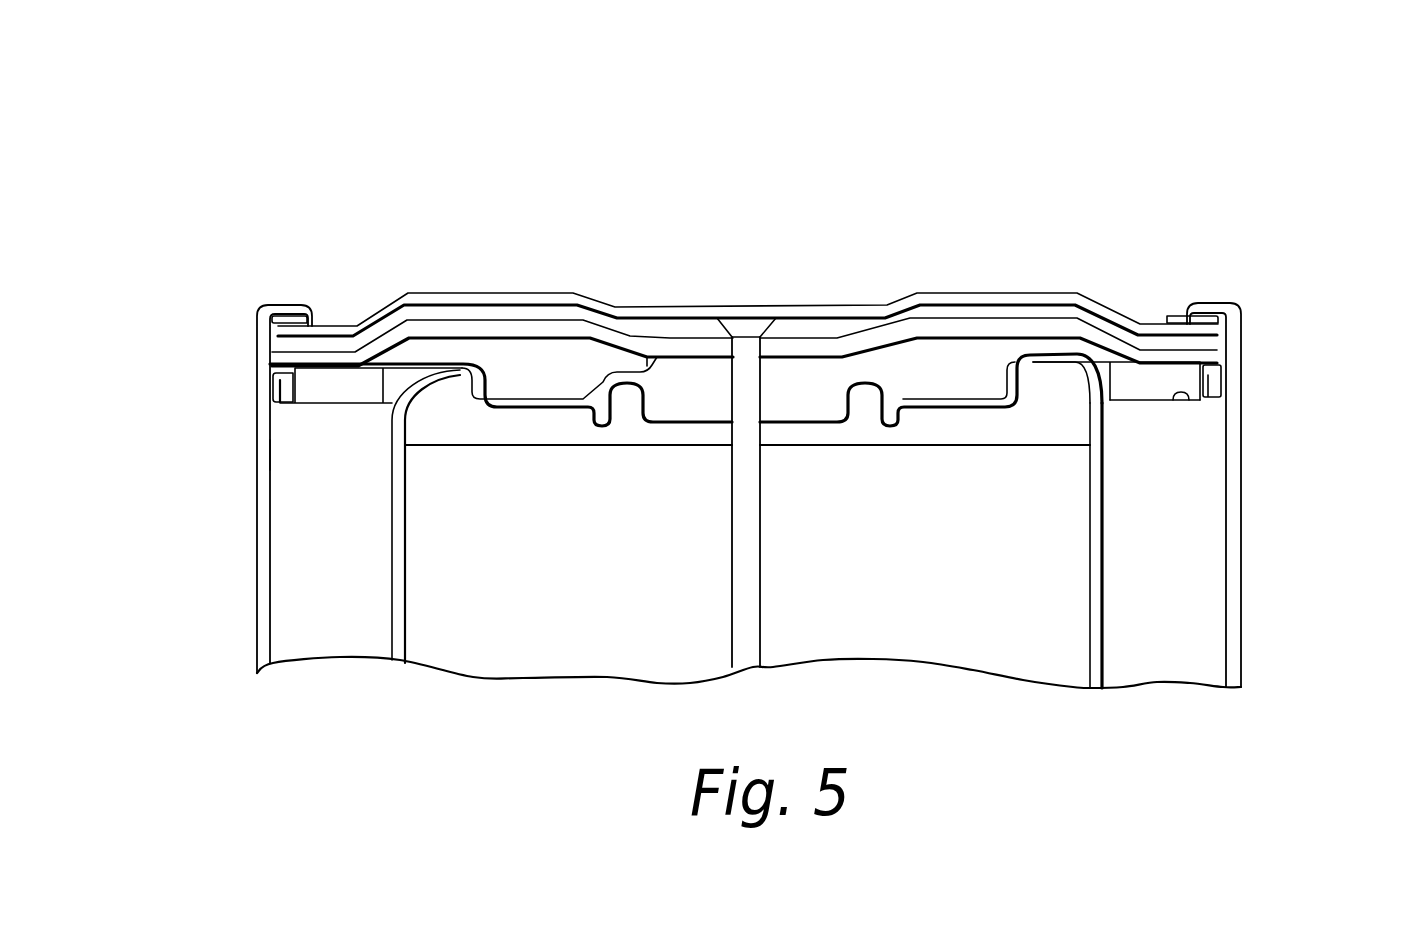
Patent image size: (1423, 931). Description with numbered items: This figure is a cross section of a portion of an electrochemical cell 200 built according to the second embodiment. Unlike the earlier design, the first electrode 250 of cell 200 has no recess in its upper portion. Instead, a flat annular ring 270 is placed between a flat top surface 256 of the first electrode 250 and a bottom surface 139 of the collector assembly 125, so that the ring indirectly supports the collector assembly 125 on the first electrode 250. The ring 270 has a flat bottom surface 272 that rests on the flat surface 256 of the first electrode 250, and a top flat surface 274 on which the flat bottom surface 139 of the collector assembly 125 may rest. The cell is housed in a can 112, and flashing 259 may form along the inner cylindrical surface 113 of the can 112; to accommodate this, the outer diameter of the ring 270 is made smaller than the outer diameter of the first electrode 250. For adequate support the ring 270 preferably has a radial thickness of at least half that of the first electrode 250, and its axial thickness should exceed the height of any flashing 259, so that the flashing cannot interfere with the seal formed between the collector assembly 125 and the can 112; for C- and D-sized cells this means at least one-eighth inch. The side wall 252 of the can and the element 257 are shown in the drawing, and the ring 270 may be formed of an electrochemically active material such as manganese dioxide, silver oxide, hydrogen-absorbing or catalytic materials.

The electrochemical cell 200 is at (711, 186).
The can 112 is at (255, 553).
The can side wall 252 is at (1233, 577).
The collector assembly 125 is at (400, 289).
The top flat surface 274 is at (1180, 360).
The bottom surface 139 is at (1150, 380).
The first electrode 250 is at (320, 492).
The flat annular ring 270 is at (317, 387).
The flat bottom surface 272 is at (1147, 400).
The flat top surface 256 is at (1183, 393).
The flashing 259 is at (1218, 377).
The seal ring 257 is at (275, 395).
The inner cylindrical surface 113 is at (275, 463).